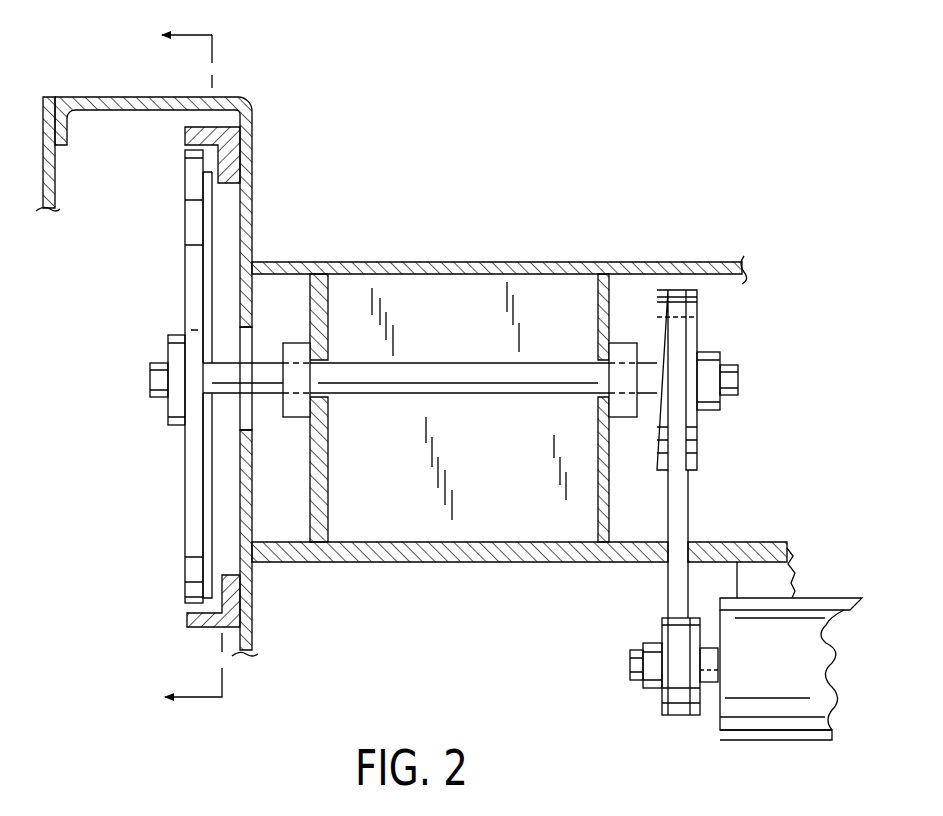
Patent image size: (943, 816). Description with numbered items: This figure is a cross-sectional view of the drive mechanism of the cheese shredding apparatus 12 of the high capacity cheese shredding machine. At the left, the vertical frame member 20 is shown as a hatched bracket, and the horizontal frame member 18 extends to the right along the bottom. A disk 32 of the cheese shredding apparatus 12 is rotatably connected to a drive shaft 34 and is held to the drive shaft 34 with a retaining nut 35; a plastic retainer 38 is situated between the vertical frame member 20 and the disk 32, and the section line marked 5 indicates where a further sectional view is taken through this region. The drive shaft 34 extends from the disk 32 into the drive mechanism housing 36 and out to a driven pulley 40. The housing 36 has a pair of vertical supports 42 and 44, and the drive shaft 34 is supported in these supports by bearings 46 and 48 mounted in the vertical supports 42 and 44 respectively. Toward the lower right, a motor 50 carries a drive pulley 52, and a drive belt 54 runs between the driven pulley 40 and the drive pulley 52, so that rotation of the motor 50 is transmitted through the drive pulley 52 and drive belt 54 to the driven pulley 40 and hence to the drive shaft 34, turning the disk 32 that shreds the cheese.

The section line 5- 5 is at (167, 367).
The cheese shredding apparatus 12 is at (127, 507).
The horizontal frame member 18 is at (420, 562).
The vertical frame member 20 is at (252, 180).
The disk 32 is at (185, 470).
The drive shaft 34 is at (490, 393).
The retaining nut 35 is at (158, 402).
The drive mechanism housing 36 is at (548, 262).
The plastic retainer 38 is at (185, 132).
The driven pulley 40 is at (698, 448).
The vertical support 42 is at (328, 490).
The vertical support 44 is at (609, 518).
The bearing 46 is at (302, 418).
The bearing 48 is at (627, 420).
The motor 50 is at (800, 663).
The drive pulley 52 is at (660, 705).
The drive belt 54 is at (680, 520).